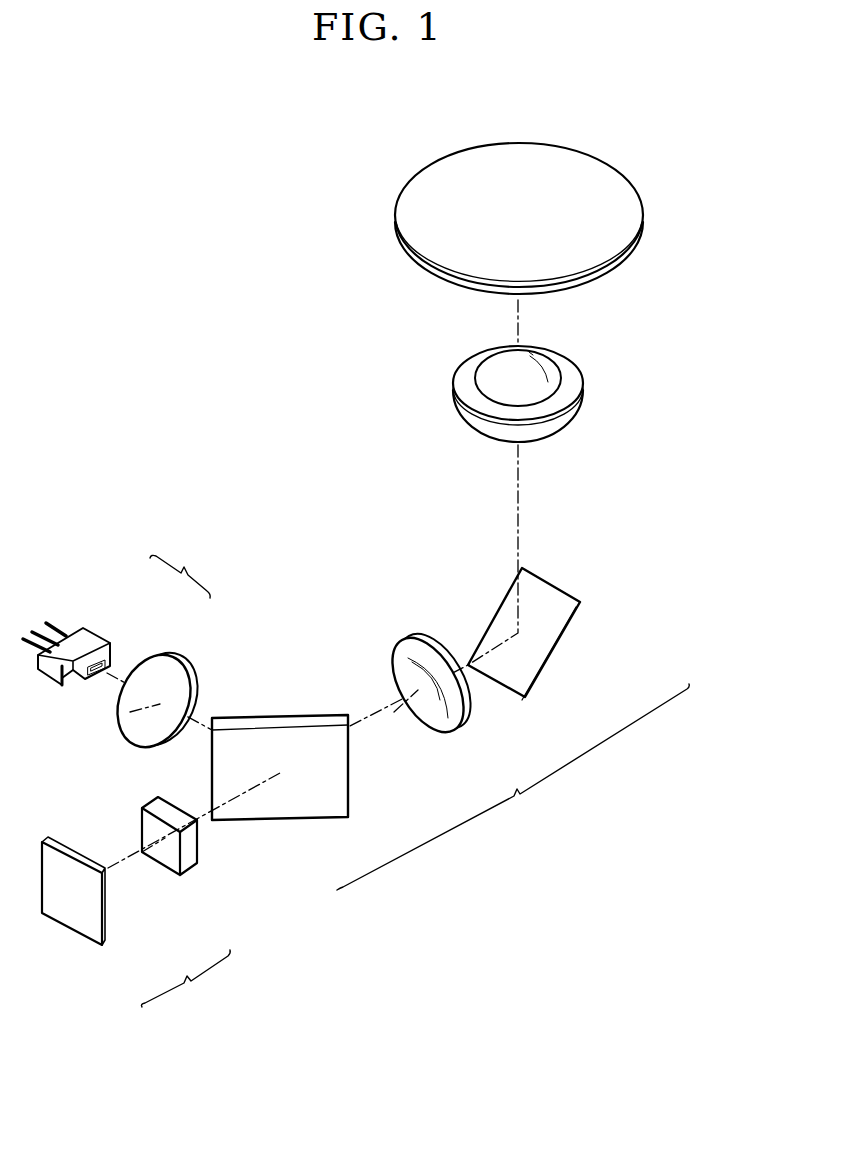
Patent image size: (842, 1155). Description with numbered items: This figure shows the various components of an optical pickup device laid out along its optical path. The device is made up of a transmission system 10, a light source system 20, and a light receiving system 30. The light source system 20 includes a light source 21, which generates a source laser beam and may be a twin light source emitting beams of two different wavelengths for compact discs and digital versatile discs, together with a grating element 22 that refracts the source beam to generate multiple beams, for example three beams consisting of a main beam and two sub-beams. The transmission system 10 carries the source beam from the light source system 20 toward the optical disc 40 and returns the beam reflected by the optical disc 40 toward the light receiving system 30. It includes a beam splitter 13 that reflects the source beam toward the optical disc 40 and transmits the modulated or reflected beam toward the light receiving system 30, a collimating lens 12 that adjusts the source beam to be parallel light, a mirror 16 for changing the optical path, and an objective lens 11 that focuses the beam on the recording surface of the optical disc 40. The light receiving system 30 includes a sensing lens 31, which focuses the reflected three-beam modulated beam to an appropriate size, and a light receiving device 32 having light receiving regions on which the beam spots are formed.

The transmission system 10 is at (513, 787).
The objective lens 11 is at (530, 388).
The collimating lens 12 is at (457, 717).
The beam splitter 13 is at (313, 808).
The mirror 16 is at (533, 663).
The light source system 20 is at (180, 571).
The light source 21 is at (90, 642).
The grating element 22 is at (163, 658).
The light receiving system 30 is at (185, 983).
The sensing lens 31 is at (188, 862).
The light receiving device 32 is at (108, 945).
The optical disc 40 is at (413, 196).